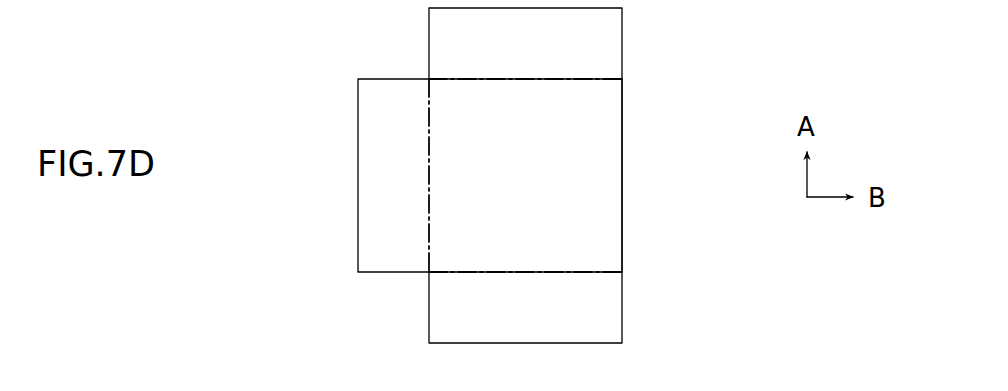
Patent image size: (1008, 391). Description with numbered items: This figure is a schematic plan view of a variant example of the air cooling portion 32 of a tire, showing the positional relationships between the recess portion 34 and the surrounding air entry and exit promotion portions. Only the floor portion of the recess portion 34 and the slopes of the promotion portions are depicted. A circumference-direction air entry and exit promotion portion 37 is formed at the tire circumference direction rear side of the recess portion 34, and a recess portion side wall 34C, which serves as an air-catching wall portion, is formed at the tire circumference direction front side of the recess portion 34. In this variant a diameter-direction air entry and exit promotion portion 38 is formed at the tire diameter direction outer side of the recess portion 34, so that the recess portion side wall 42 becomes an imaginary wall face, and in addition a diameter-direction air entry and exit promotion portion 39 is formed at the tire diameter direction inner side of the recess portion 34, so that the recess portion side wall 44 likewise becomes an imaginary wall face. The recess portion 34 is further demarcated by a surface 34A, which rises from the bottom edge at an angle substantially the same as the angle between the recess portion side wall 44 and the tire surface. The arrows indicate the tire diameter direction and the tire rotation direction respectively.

The air cooling portion 32 is at (660, 46).
The recess portion 34 is at (626, 105).
The surface 34A is at (506, 80).
The recess portion side wall 34C is at (622, 197).
The circumference-direction air entry and exit promotion portion 37 is at (357, 174).
The diameter-direction air entry and exit promotion portion 38 is at (428, 45).
The diameter-direction air entry and exit promotion portion 39 is at (626, 314).
The recess portion side wall 42 is at (431, 225).
The recess portion side wall 44 is at (553, 272).